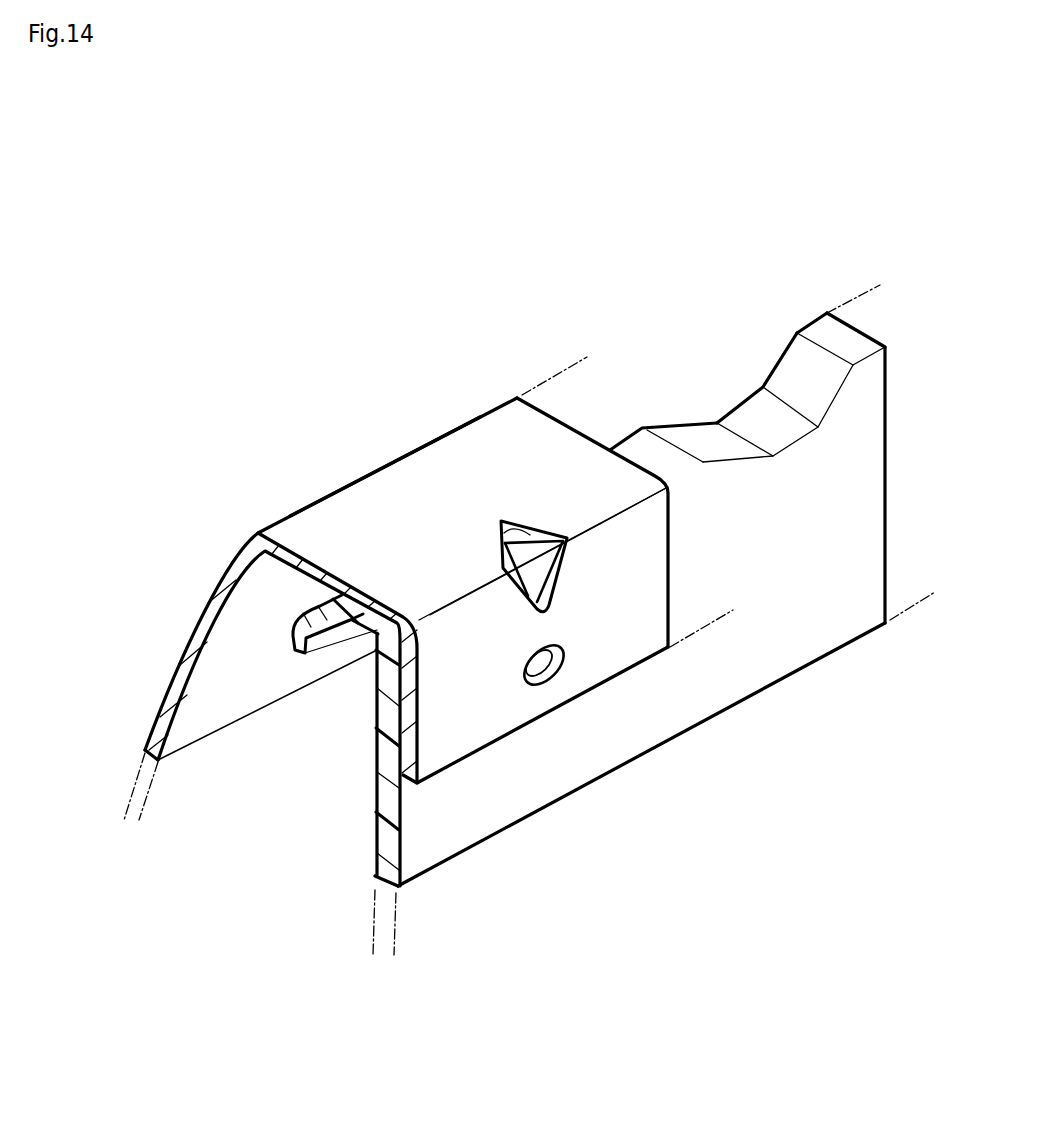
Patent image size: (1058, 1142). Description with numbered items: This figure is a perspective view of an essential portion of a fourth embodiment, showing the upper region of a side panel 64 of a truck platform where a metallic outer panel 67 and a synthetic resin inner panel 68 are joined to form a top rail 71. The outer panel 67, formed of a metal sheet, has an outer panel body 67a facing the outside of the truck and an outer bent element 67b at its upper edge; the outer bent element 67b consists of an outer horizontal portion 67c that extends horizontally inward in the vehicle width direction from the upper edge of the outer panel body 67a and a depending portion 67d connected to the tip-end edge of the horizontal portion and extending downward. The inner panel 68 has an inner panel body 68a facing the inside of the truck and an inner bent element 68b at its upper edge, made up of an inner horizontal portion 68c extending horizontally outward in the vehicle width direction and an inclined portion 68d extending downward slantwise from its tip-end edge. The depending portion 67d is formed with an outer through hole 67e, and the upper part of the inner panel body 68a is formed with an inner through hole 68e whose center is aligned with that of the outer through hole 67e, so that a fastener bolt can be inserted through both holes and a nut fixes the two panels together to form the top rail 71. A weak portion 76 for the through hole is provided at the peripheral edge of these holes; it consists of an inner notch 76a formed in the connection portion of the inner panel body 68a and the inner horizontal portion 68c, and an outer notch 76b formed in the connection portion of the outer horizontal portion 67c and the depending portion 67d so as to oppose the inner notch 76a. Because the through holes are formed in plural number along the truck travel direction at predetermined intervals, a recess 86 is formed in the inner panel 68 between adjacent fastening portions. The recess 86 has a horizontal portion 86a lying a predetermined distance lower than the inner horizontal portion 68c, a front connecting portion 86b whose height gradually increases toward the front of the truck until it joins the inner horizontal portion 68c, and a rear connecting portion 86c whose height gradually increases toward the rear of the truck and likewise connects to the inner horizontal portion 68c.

The side panel 64 is at (370, 475).
The outer panel 67 is at (298, 512).
The outer panel body 67a is at (188, 640).
The outer bent element 67b is at (581, 461).
The outer horizontal portion 67c is at (540, 447).
The depending portion 67d is at (640, 553).
The outer through hole 67e is at (552, 645).
The inner panel 68 is at (607, 740).
The inner panel body 68a is at (660, 708).
The inner bent element 68b is at (313, 741).
The inner horizontal portion 68c is at (362, 625).
The inclined portion 68d is at (320, 628).
The inner through hole 68e is at (538, 660).
The top rail 71 is at (428, 492).
The weak portion for through hole 76 is at (488, 443).
The inner notch 76a is at (500, 560).
The outer notch 76b is at (522, 537).
The recess 86 is at (747, 331).
The horizontal portion 86a is at (766, 420).
The front connecting portion 86b is at (807, 387).
The rear connecting portion 86c is at (713, 437).